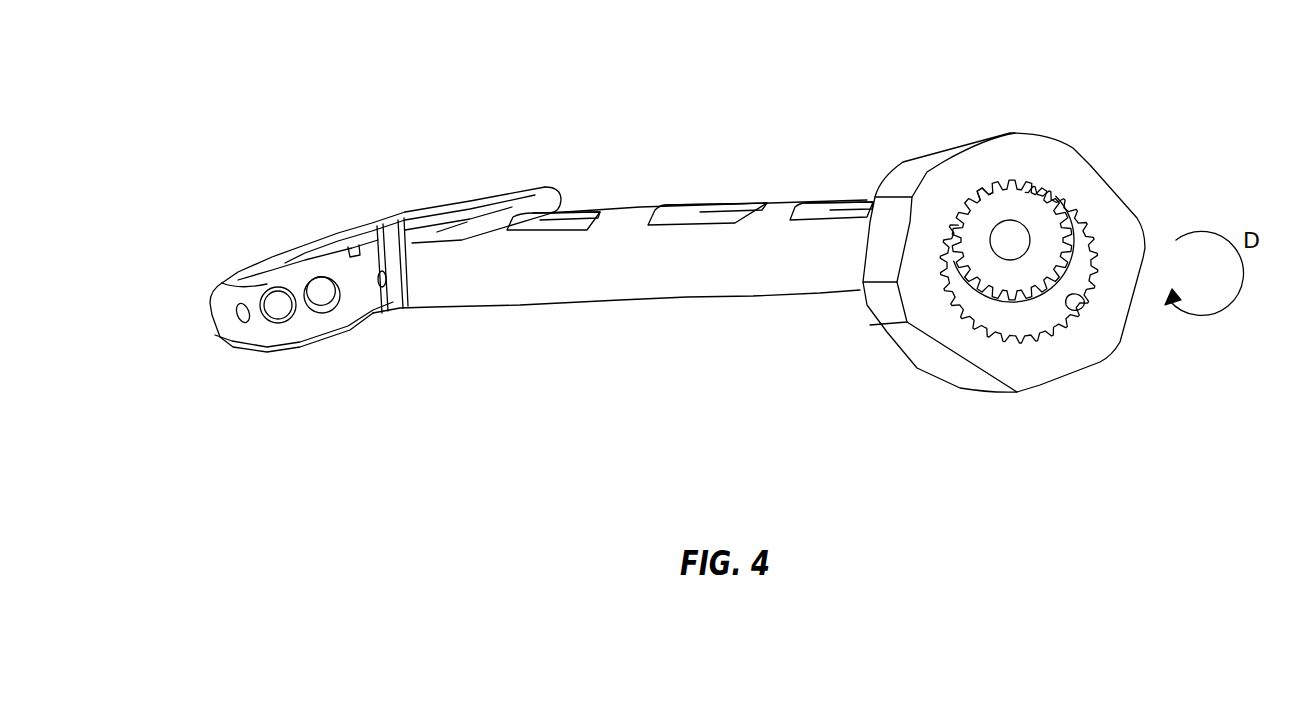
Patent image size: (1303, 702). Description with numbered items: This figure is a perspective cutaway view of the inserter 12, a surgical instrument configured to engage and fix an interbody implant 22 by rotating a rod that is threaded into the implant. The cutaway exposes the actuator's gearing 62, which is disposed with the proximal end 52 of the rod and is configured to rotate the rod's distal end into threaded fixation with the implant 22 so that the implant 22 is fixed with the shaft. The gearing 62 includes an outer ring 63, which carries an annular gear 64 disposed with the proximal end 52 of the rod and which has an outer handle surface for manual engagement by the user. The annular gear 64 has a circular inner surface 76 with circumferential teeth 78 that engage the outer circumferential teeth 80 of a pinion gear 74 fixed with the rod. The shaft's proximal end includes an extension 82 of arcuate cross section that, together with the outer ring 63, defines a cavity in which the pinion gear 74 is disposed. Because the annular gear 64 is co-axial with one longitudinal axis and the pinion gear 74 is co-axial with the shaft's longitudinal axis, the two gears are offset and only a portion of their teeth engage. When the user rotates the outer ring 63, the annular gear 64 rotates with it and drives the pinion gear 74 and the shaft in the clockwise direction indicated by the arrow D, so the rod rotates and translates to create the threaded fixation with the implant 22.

The inserter 12 is at (635, 180).
The interbody implant 22 is at (225, 278).
The proximal end 52 is at (1007, 245).
The gearing 62 is at (1117, 140).
The outer ring 63 is at (942, 154).
The annular gear 64 is at (1063, 333).
The pinion gear 74 is at (1023, 212).
The circular inner surface 76 is at (1086, 300).
The circumferential teeth 78 is at (977, 202).
The outer circumferential teeth 80 is at (981, 197).
The extension 82 is at (1025, 315).